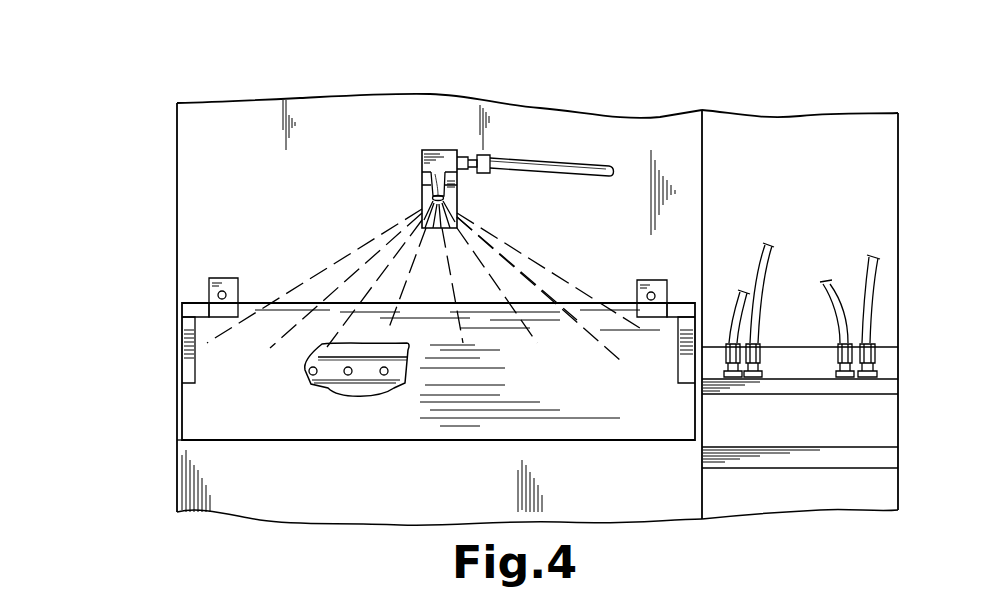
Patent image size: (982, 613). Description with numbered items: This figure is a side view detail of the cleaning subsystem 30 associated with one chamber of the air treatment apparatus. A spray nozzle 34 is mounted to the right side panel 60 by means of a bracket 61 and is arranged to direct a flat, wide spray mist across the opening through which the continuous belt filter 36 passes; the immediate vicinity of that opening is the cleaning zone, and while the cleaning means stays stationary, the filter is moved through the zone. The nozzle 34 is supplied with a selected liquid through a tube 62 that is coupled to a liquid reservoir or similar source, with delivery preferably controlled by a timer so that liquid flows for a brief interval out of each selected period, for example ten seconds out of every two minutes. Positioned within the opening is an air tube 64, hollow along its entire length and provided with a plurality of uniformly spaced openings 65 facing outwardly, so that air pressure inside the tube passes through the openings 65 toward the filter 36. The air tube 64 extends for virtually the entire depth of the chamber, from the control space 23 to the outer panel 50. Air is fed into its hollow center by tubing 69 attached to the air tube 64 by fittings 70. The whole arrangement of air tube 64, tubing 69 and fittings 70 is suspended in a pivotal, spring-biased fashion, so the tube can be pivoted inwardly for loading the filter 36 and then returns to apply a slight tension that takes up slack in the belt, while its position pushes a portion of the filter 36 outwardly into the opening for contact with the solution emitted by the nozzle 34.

The right side panel 60 is at (251, 116).
The spray nozzle 34 is at (437, 173).
The bracket 61 is at (458, 195).
The tube 62 is at (592, 165).
The control space 23 is at (733, 138).
The cleaning subsystem 30 is at (160, 278).
The continuous belt filter 36 is at (208, 393).
The outer panel 50 is at (177, 488).
The air tube 64 is at (365, 378).
The openings 65 is at (312, 377).
The tubing 69 is at (762, 283).
The fitting 70 is at (760, 364).